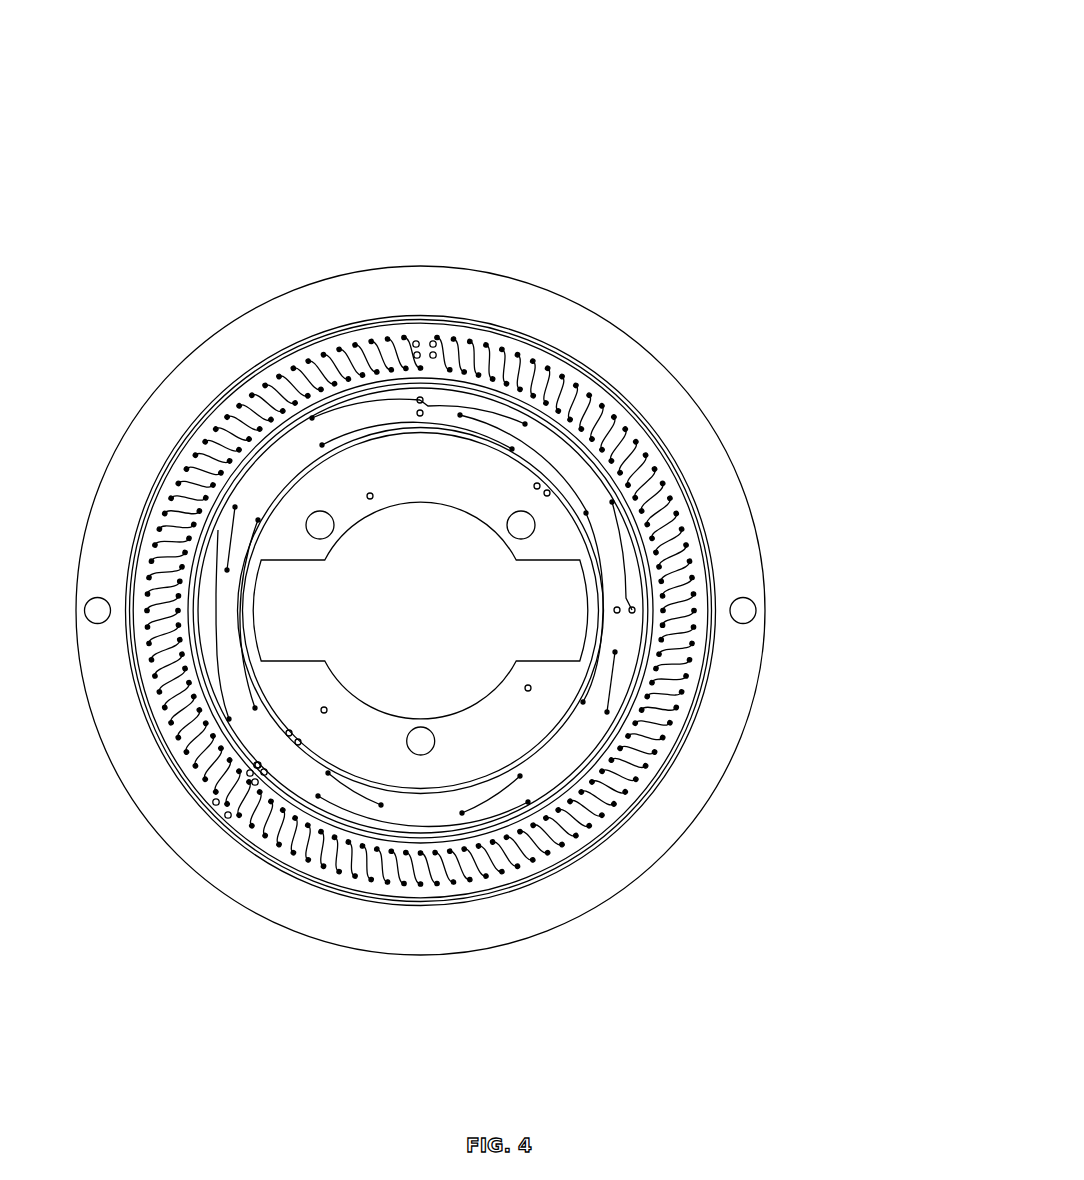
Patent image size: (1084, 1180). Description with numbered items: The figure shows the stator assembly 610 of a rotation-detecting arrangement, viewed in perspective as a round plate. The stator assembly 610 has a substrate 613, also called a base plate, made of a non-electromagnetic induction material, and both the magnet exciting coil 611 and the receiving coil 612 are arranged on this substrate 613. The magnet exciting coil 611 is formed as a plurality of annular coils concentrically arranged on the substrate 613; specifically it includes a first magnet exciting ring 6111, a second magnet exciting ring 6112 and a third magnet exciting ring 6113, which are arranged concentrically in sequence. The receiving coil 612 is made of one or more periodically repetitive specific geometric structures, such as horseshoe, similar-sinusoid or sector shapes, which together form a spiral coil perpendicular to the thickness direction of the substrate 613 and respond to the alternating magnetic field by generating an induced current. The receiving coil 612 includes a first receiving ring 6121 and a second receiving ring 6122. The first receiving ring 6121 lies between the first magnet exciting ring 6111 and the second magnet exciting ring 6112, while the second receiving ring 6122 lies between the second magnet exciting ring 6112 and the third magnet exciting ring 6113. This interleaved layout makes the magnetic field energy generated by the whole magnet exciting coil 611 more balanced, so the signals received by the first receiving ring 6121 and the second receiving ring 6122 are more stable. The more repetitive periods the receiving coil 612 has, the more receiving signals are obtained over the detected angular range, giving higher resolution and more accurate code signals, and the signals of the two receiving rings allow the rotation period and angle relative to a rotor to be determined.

The stator assembly 610 is at (201, 913).
The magnet exciting coil 611 is at (543, 153).
The first magnet exciting ring 6111 is at (188, 427).
The second magnet exciting ring 6112 is at (342, 385).
The third magnet exciting ring 6113 is at (480, 440).
The receiving coil 612 is at (817, 214).
The first receiving ring 6121 is at (595, 418).
The second receiving ring 6122 is at (622, 560).
The substrate 613 is at (107, 517).